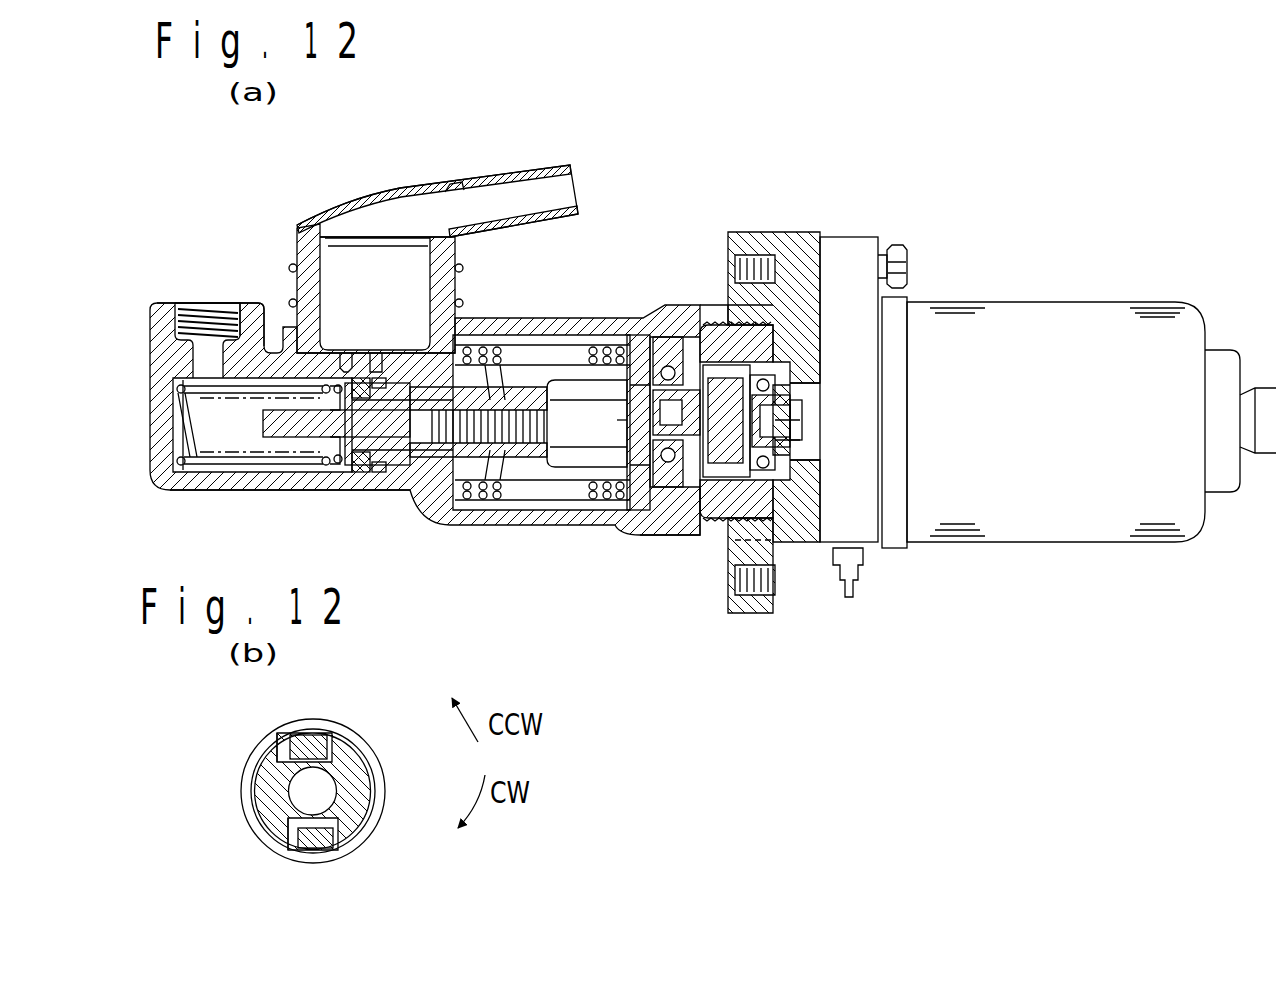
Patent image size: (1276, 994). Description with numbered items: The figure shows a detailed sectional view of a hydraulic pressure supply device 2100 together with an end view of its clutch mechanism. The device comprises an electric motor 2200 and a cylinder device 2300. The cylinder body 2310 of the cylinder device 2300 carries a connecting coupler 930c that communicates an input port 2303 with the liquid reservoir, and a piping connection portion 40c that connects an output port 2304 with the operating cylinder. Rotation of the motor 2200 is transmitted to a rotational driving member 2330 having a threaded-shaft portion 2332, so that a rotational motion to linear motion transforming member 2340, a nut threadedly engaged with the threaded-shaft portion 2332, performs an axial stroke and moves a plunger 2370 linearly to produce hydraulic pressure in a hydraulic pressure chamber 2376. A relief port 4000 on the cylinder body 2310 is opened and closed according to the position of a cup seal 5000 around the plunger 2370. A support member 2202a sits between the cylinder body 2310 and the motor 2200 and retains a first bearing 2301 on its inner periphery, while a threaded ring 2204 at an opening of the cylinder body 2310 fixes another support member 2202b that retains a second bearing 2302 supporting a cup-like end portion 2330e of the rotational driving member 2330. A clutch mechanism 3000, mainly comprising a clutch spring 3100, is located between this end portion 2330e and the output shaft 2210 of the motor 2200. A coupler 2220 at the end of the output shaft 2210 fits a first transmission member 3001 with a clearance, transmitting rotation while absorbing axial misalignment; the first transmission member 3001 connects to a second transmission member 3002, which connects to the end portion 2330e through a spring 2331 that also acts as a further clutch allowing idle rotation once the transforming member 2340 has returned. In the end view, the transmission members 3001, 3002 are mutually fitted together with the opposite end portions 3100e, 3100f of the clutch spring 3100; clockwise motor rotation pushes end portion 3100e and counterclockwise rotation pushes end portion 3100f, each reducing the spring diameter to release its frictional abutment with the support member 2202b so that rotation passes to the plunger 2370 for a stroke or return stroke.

In FIG. 12A, the connecting coupler 930c is at (504, 178).
In FIG. 12A, the input port 2303 is at (347, 283).
In FIG. 12A, the output port 2304 is at (203, 306).
In FIG. 12A, the piping connection portion 40c is at (165, 318).
In FIG. 12A, the relief port 4000 is at (350, 356).
In FIG. 12A, the threaded-shaft portion 2332 is at (518, 413).
In FIG. 12A, the rotational motion to linear motion transforming member 2340 is at (573, 400).
In FIG. 12A, the support member 2202b is at (693, 323).
In FIG. 12A, the spring 2331 is at (675, 345).
In FIG. 12A, the threaded ring 2204 is at (738, 338).
In FIG. 12A, the clutch spring 3100 is at (752, 395).
In FIG. 12B, the clutch spring 3100 is at (390, 725).
In FIG. 12A, the hydraulic pressure supply device 2100 is at (866, 214).
In FIG. 12A, the first transmission member 3001 is at (795, 385).
In FIG. 12B, the first transmission member 3001 is at (305, 743).
In FIG. 12A, the output shaft 2210 is at (778, 427).
In FIG. 12A, the coupler 2220 is at (793, 452).
In FIG. 12A, the first bearing 2301 is at (793, 483).
In FIG. 12A, the hydraulic pressure chamber 2376 is at (203, 427).
In FIG. 12A, the cylinder body 2310 is at (268, 488).
In FIG. 12A, the cup seal 5000 is at (363, 470).
In FIG. 12A, the plunger 2370 is at (390, 447).
In FIG. 12A, the cylinder device 2300 is at (505, 533).
In FIG. 12A, the second transmission member 3002 is at (617, 420).
In FIG. 12B, the second transmission member 3002 is at (363, 807).
In FIG. 12A, the cup-like end portion 2330e is at (640, 496).
In FIG. 12A, the rotational driving member 2330 is at (645, 505).
In FIG. 12A, the clutch mechanism 3000 is at (735, 478).
In FIG. 12A, the second bearing 2302 is at (690, 538).
In FIG. 12A, the support member 2202a is at (800, 530).
In FIG. 12A, the electric motor 2200 is at (1000, 544).
In FIG. 12B, the end portion of clutch spring 3100f is at (288, 745).
In FIG. 12B, the end portion of clutch spring 3100e is at (297, 853).